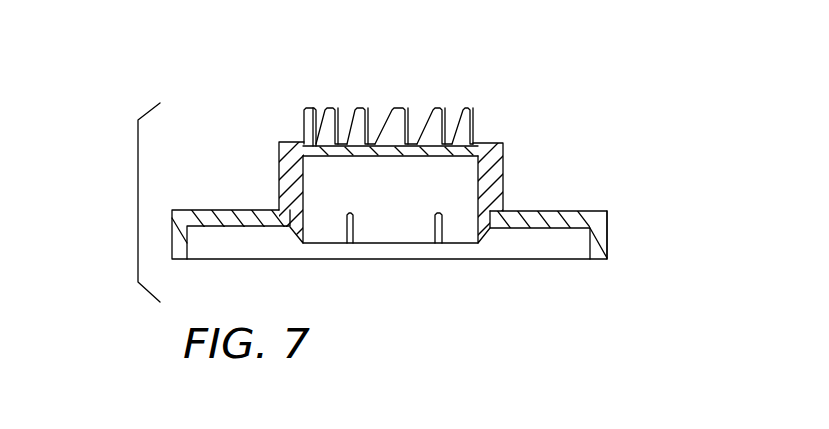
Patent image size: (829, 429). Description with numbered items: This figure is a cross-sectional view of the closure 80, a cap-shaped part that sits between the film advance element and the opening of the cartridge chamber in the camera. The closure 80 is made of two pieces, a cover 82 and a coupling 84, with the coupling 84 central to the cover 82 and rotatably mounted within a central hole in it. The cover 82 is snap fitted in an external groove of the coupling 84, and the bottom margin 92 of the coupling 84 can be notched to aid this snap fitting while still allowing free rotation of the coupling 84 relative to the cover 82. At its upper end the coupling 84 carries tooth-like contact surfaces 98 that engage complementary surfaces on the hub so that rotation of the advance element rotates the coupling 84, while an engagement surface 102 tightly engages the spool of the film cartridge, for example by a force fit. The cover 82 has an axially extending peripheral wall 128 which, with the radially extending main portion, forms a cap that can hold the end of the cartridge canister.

The closure 80 is at (138, 193).
The cover 82 is at (568, 212).
The coupling 84 is at (507, 155).
The bottom margin 92 is at (298, 245).
The contact surface 98 is at (453, 107).
The engagement surface 102 is at (480, 222).
The peripheral wall 128 is at (607, 228).